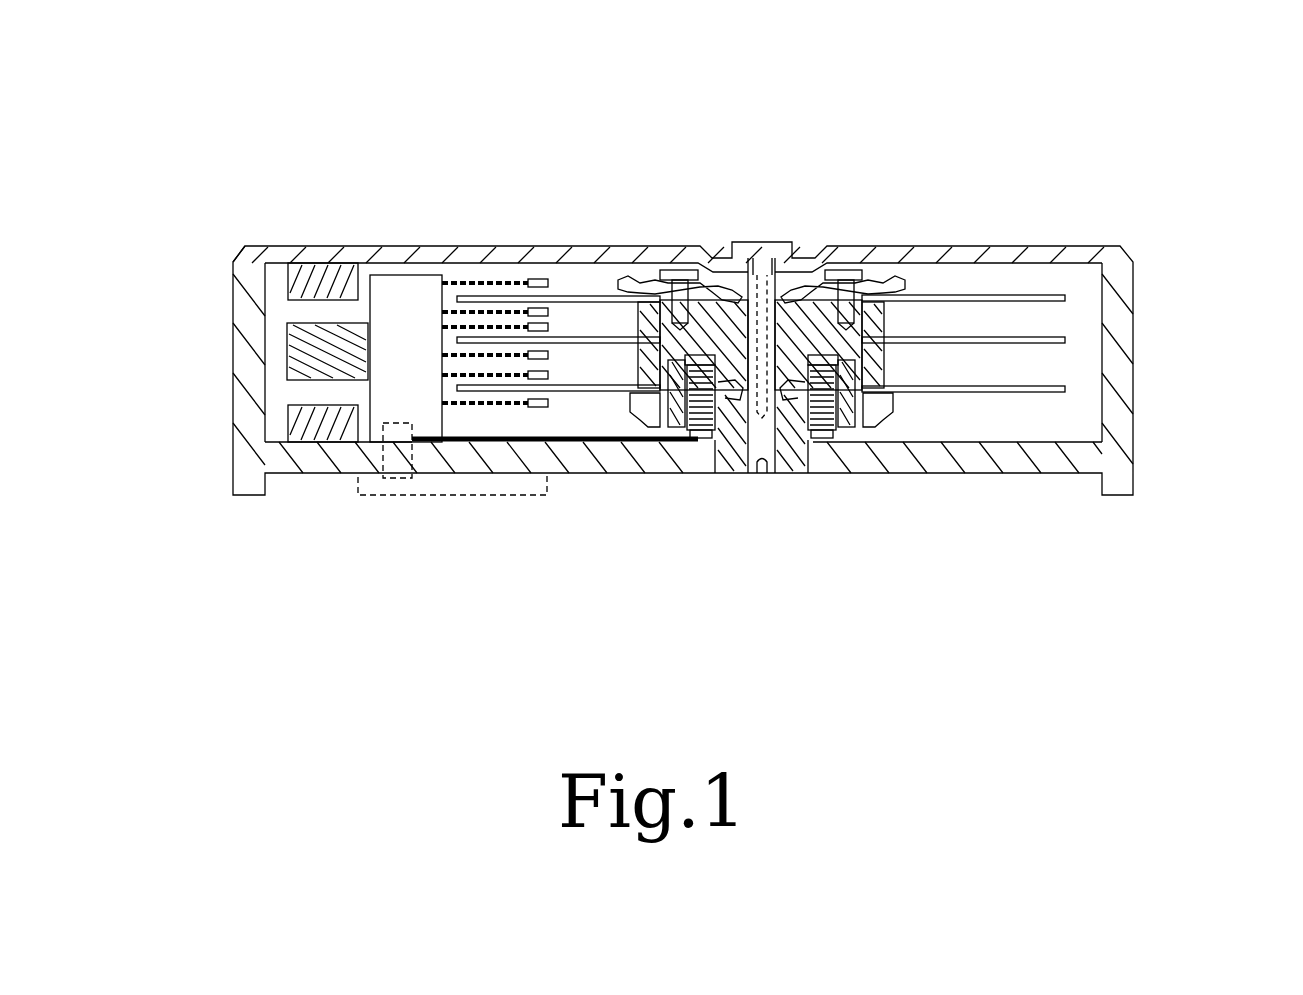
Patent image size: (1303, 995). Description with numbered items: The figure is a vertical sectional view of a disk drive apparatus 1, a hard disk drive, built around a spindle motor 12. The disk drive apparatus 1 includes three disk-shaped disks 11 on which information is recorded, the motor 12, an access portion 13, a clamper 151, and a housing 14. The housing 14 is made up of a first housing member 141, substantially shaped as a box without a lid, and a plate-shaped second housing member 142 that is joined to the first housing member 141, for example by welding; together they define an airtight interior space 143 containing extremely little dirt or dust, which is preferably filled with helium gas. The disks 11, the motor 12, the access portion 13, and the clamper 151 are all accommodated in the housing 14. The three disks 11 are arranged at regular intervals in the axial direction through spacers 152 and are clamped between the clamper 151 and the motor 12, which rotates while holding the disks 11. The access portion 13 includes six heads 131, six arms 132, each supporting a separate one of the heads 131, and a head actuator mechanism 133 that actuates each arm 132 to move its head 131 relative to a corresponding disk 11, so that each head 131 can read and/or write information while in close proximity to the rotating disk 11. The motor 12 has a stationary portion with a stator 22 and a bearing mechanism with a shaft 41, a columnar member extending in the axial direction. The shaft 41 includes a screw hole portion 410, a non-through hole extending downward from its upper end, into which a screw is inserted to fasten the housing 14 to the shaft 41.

The disk drive apparatus 1 is at (205, 210).
The disk 11 is at (985, 297).
The spindle motor 12 is at (845, 272).
The access portion 13 is at (595, 585).
The head 131 is at (547, 298).
The arm 132 is at (455, 285).
The head actuator mechanism 133 is at (412, 313).
The housing 14 is at (1212, 212).
The first housing member 141 is at (1118, 338).
The second housing member 142 is at (1087, 255).
The interior space 143 is at (1093, 395).
The clamper 151 is at (625, 280).
The spacer 152 is at (875, 300).
The stator 22 is at (700, 440).
The shaft 41 is at (775, 440).
The screw hole portion 410 is at (688, 268).